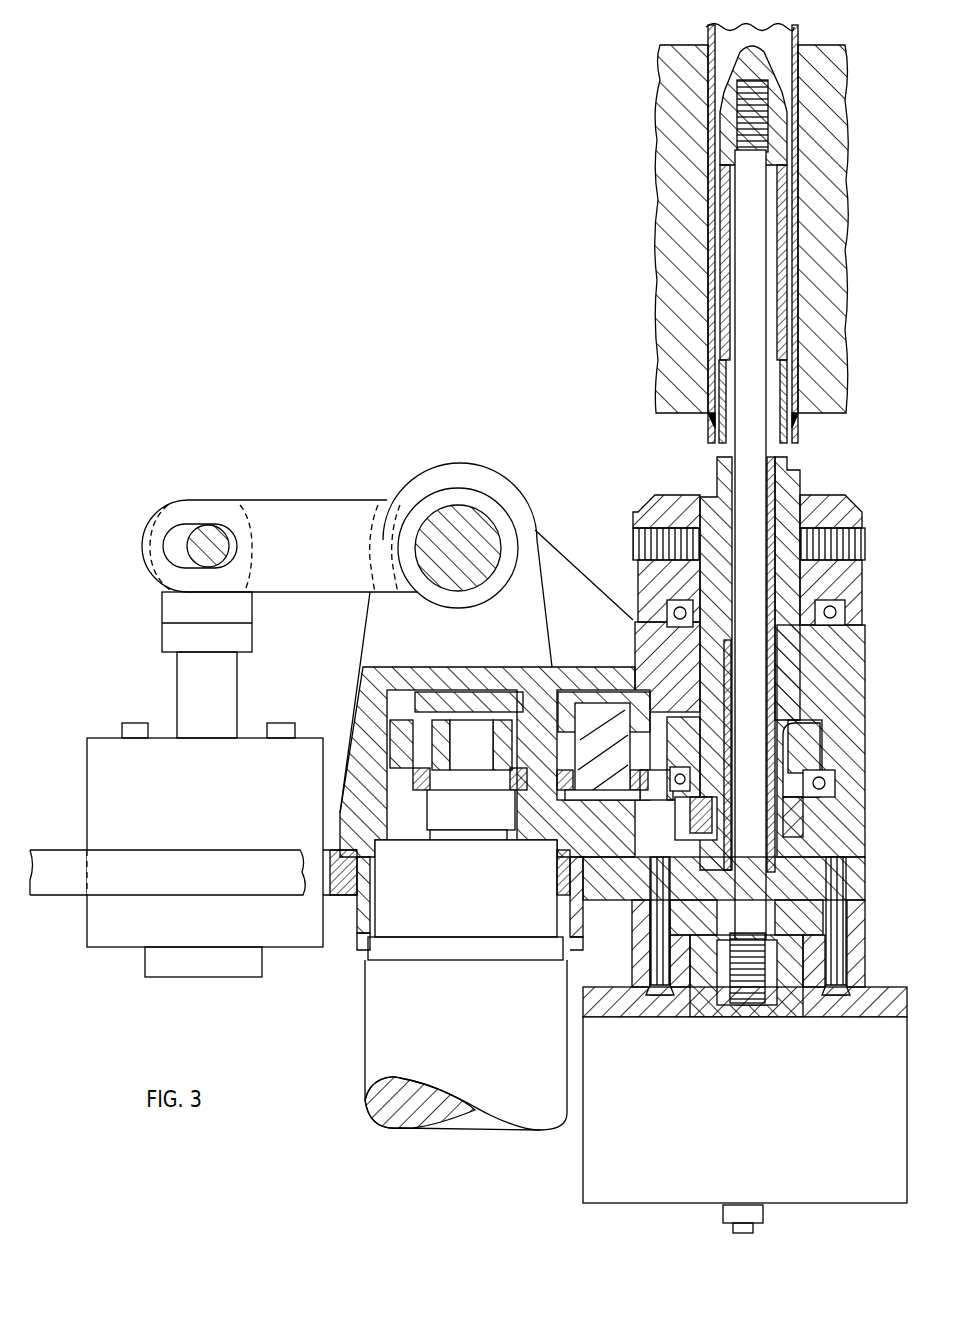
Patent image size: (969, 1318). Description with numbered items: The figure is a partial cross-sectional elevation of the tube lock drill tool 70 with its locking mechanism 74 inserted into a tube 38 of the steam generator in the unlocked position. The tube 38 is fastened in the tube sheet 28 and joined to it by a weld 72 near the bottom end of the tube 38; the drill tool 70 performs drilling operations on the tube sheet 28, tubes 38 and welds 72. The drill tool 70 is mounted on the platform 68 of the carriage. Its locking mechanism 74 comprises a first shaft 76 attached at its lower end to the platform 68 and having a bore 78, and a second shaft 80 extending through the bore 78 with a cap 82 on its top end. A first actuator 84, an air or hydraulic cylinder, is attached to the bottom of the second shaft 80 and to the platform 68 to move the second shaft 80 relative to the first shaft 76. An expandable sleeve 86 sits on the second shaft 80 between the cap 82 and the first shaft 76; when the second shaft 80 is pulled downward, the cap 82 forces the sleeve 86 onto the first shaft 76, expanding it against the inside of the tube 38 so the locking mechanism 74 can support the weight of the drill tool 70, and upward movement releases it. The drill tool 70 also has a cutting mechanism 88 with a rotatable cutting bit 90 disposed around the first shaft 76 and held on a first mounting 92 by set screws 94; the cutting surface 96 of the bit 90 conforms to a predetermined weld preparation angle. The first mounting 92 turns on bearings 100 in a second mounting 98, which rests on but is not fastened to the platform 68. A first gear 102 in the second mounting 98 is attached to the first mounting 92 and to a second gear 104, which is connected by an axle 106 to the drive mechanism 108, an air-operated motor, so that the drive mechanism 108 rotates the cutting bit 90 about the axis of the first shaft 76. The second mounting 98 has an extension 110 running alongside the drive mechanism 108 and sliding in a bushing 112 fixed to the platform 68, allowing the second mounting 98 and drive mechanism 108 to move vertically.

The tube sheet 28 is at (662, 292).
The tube 38 is at (800, 25).
The platform 68 is at (72, 895).
The drill tool 70 is at (398, 352).
The weld 72 is at (706, 425).
The locking mechanism 74 is at (652, 302).
The first shaft 76 is at (785, 390).
The bore 78 is at (788, 478).
The second shaft 80 is at (755, 318).
The cap 82 is at (775, 126).
The first actuator 84 is at (718, 1132).
The expandable sleeve 86 is at (724, 225).
The cutting mechanism 88 is at (650, 516).
The rotatable cutting bit 90 is at (828, 512).
The first mounting 92 is at (862, 580).
The set screws 94 is at (636, 548).
The cutting surface 96 is at (716, 470).
The second mounting 98 is at (645, 652).
The bearings 100 is at (670, 608).
The first gear 102 is at (590, 769).
The second gear 104 is at (469, 744).
The axle 106 is at (458, 817).
The drive mechanism 108 is at (447, 912).
The extension 110 is at (358, 948).
The bushing 112 is at (340, 895).